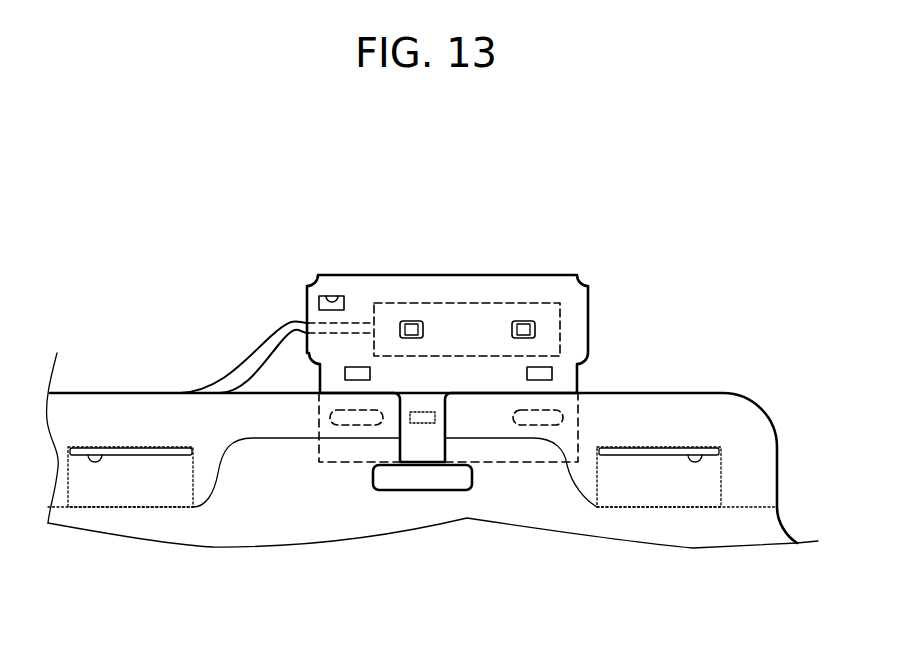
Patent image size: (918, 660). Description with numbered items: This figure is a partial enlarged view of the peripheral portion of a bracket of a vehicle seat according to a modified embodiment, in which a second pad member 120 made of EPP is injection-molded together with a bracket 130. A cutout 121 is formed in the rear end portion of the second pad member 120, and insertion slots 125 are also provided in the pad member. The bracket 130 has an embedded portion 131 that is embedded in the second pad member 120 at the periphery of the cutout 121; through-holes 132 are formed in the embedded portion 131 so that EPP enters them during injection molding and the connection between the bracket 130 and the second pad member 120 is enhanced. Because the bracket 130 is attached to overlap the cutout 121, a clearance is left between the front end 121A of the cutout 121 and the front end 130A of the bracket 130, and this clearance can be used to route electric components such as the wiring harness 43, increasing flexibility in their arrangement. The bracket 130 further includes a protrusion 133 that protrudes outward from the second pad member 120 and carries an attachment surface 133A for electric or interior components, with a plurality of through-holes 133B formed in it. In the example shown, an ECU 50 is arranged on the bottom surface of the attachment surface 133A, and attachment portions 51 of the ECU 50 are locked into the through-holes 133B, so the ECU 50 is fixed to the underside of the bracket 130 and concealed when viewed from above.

The second pad member 120 is at (710, 252).
The cutout 121 is at (448, 480).
The front end of cutout 121A is at (397, 490).
The insertion slot 125 is at (95, 450).
The wiring harness 43 is at (252, 362).
The bracket 130 is at (700, 300).
The front end of bracket 130A is at (417, 465).
The embedded portion 131 is at (510, 400).
The through-hole 132 is at (582, 438).
The protrusion 133 is at (504, 333).
The attachment surface 133A is at (388, 288).
The through-hole 133B is at (336, 297).
The ECU 50 is at (467, 280).
The attachment portion 51 is at (527, 321).